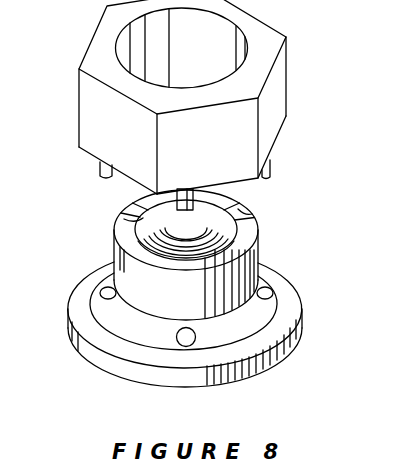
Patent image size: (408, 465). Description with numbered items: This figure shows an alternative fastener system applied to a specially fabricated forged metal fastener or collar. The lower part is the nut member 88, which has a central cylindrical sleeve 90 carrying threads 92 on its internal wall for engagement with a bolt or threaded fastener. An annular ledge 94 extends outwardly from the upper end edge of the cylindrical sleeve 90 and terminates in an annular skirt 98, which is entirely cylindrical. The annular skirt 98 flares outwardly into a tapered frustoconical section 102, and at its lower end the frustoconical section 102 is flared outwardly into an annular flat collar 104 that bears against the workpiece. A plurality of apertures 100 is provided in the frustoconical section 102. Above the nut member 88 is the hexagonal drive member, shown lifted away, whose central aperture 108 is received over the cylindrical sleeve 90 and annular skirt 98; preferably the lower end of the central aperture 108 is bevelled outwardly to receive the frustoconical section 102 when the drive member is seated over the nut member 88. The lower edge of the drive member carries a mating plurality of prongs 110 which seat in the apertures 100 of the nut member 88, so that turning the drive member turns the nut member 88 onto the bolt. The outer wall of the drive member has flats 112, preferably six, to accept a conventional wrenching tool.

The nut member 88 is at (105, 239).
The central cylindrical sleeve 90 is at (138, 203).
The threads 92 is at (137, 226).
The annular ledge 94 is at (252, 217).
The annular skirt 98 is at (254, 218).
The apertures 100 is at (100, 293).
The frustoconical section 102 is at (253, 322).
The annular flat collar 104 is at (94, 352).
The central aperture 108 is at (134, 52).
The prongs 110 is at (99, 171).
The flats 112 is at (96, 103).